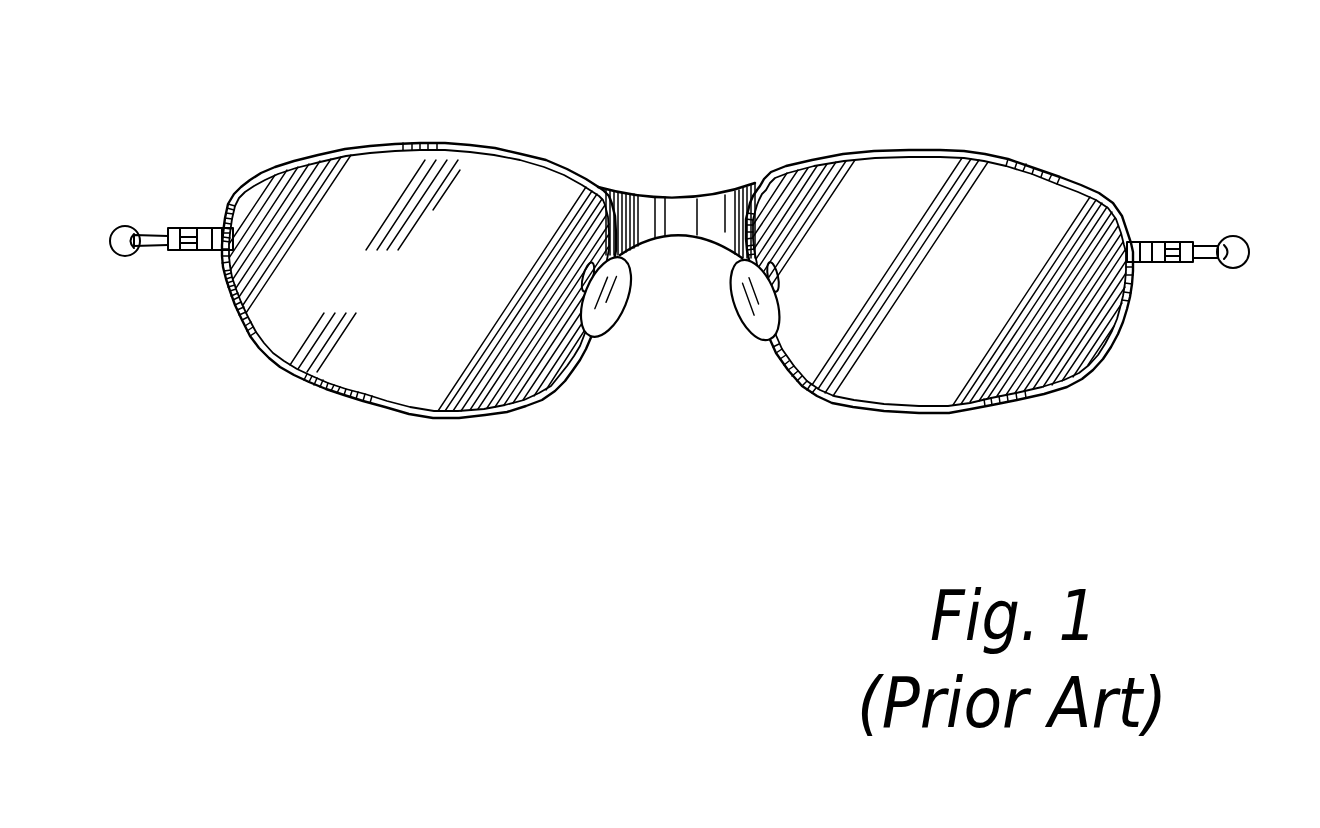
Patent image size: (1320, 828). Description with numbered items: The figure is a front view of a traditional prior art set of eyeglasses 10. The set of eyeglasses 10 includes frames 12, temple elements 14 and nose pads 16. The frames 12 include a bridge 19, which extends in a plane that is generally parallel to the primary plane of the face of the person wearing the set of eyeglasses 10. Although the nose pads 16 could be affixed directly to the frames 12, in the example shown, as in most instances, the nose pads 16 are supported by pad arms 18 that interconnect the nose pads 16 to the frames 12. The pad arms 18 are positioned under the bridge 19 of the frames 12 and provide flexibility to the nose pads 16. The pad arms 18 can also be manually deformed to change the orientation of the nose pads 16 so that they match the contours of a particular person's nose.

The set of eyeglasses 10 is at (542, 111).
The frames 12 is at (862, 152).
The temple elements 14 is at (1237, 233).
The nose pads 16 is at (621, 283).
The pad arms 18 is at (780, 277).
The bridge 19 is at (698, 210).